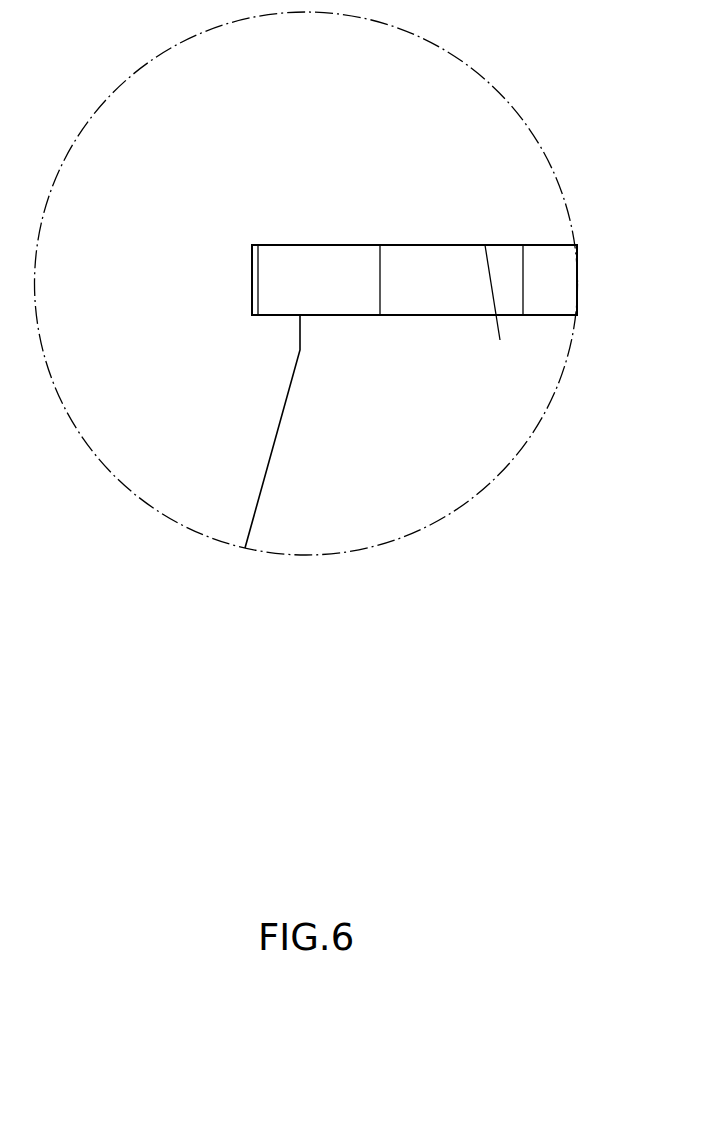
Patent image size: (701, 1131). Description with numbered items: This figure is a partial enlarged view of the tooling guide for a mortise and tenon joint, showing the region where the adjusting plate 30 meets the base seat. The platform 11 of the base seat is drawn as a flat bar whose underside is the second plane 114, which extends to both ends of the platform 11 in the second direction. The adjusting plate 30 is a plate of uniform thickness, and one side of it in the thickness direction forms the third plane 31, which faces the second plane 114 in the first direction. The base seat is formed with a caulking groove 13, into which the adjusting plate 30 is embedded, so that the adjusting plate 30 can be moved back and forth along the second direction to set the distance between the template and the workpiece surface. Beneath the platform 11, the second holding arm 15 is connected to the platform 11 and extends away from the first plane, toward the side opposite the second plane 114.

The platform 11 is at (540, 245).
The caulking groove 13 is at (252, 287).
The second holding arm 15 is at (270, 465).
The adjusting plate 30 is at (393, 315).
The third plane 31 is at (363, 245).
The second plane 114 is at (500, 340).